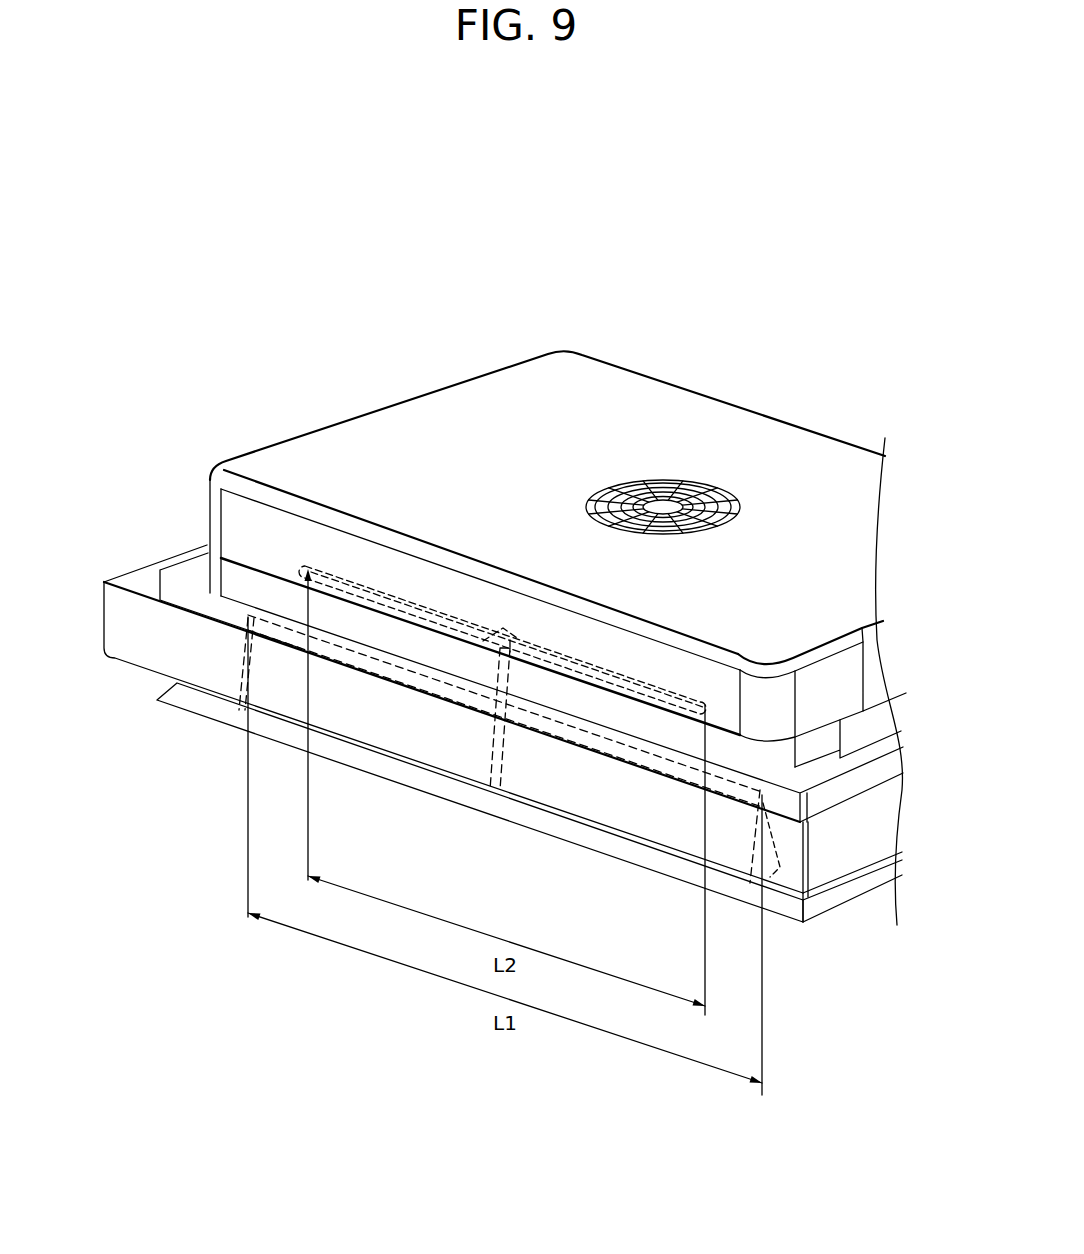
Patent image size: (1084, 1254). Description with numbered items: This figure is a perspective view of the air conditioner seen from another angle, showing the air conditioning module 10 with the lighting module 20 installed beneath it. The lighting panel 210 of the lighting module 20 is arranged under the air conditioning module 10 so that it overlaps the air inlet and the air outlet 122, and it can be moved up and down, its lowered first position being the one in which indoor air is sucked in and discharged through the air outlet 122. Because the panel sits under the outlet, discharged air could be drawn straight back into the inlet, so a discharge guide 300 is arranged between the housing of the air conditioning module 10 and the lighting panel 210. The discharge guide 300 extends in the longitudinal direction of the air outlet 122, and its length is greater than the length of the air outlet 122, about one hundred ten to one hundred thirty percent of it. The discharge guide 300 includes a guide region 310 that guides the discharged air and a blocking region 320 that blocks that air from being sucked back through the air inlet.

The air conditioning module 10 is at (250, 448).
The lighting module 20 is at (123, 569).
The air outlet 122 is at (404, 600).
The lighting panel 210 is at (545, 851).
The discharge guide 300 is at (727, 880).
The guide region 310 is at (600, 790).
The blocking region 320 is at (770, 867).